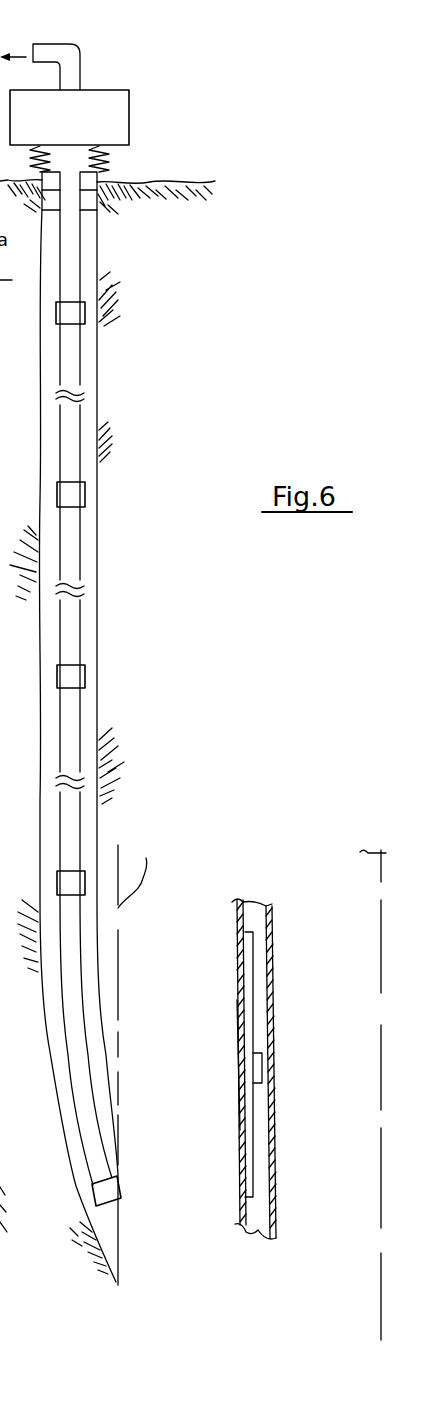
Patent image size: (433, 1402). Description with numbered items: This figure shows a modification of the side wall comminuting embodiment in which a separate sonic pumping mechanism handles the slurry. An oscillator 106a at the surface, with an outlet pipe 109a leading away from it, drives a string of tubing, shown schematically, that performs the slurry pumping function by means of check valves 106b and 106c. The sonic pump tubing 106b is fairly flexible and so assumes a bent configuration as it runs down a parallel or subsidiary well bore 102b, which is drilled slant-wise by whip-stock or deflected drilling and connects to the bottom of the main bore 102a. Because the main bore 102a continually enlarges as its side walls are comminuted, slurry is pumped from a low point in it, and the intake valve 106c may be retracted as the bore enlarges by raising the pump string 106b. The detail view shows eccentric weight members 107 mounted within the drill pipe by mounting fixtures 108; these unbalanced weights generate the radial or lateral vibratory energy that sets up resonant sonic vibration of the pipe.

The outlet pipe 109a is at (63, 50).
The oscillator 106a is at (110, 113).
The subsidiary well bore 102b is at (94, 332).
The check valves / sonic pump tubing 106b is at (73, 493).
The intake valve 106c is at (104, 1188).
The main bore 102a is at (118, 846).
The eccentric weight members 107 is at (243, 976).
The mounting fixtures 108 is at (268, 1058).